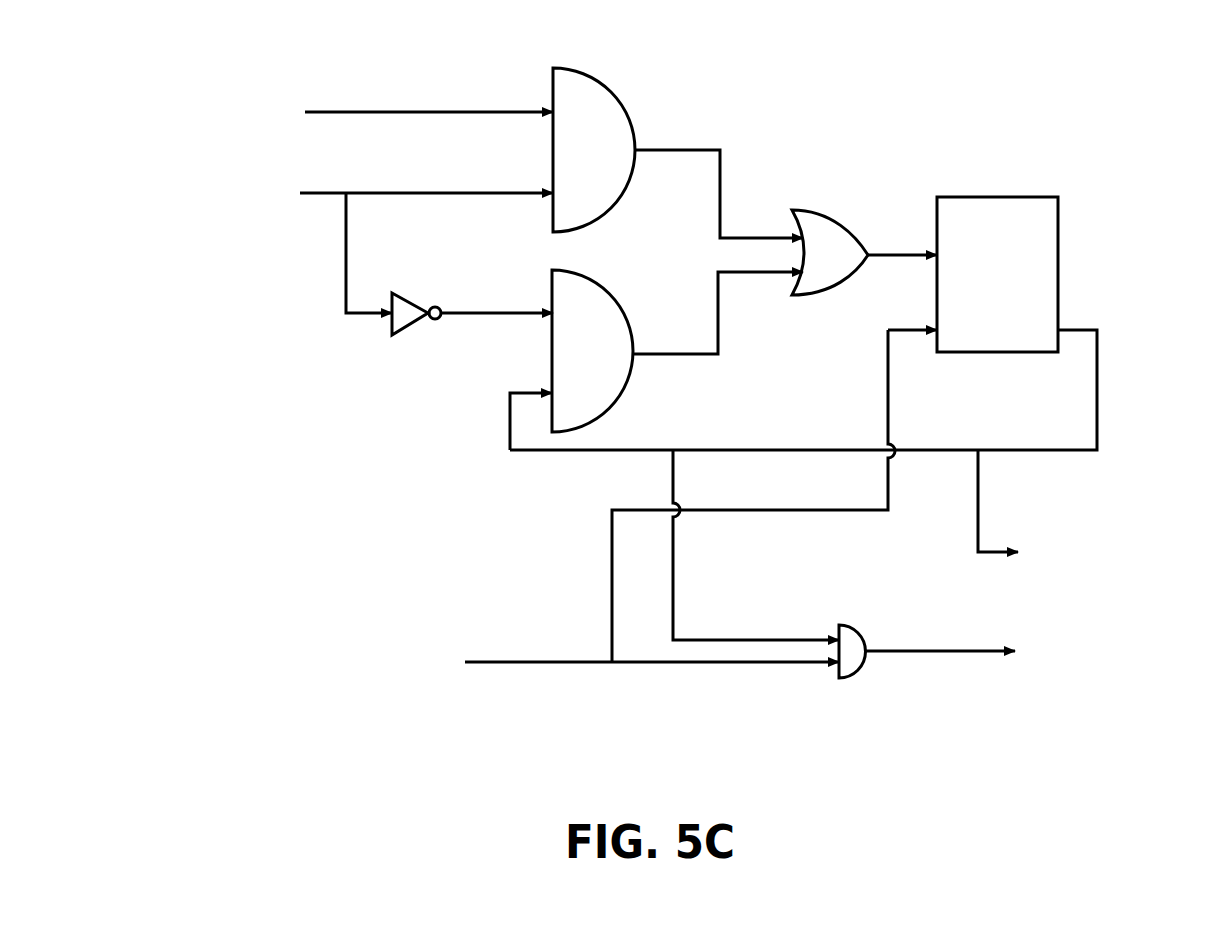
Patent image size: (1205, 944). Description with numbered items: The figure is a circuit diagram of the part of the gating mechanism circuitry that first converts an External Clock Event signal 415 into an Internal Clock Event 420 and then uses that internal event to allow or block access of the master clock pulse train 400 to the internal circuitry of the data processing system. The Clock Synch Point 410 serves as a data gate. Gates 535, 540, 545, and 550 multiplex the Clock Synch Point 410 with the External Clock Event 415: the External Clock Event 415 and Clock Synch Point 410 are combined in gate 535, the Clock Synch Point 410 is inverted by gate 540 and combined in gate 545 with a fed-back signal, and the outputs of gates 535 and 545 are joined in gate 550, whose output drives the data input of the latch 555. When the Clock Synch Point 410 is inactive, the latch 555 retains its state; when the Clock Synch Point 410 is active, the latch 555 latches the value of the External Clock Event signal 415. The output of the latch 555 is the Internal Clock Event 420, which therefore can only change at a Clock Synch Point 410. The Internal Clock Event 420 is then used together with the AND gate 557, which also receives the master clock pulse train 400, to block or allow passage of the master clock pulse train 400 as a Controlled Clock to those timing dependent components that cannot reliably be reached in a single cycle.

The External Clock Event signal 415 is at (255, 92).
The Clock Synch Point 410 is at (232, 202).
The gate 540 is at (418, 322).
The gate 535 is at (588, 72).
The gate 545 is at (605, 418).
The gate 550 is at (845, 289).
The latch 555 is at (987, 197).
The Internal Clock Event 420 is at (1077, 540).
The master clock pulse train 400 is at (268, 676).
The AND gate 557 is at (865, 668).